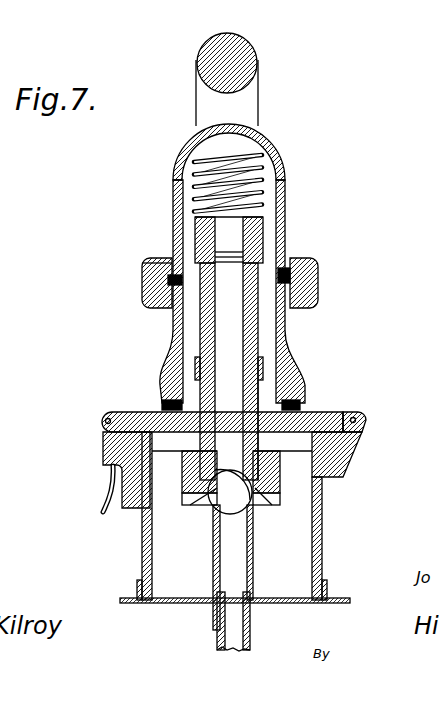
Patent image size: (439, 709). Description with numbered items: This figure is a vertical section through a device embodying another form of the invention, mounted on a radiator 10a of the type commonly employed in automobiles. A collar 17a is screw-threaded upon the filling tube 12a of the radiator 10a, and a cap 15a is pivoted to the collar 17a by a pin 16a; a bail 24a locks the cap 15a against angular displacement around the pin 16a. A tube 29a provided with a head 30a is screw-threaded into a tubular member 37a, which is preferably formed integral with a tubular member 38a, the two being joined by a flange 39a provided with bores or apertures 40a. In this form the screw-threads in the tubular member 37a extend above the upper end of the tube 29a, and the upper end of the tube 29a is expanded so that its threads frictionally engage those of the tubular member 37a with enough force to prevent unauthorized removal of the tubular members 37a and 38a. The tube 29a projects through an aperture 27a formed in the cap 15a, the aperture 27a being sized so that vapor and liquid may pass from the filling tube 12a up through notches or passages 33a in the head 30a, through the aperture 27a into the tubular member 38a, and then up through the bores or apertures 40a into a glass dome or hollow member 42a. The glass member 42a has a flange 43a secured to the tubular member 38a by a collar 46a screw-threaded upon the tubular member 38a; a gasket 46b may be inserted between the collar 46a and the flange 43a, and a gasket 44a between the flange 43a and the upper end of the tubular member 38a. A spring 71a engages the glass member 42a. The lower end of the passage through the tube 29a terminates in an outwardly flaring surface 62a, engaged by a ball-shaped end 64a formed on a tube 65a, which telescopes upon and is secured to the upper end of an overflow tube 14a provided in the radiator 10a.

The spring 71a is at (240, 162).
The dome or hollow member 42a is at (280, 168).
The tubular member 37a is at (263, 242).
The flange 39a is at (258, 272).
The flange 43a is at (312, 266).
The gasket 46b is at (172, 276).
The collar 46a is at (157, 263).
The gasket 44a is at (196, 281).
The bores or apertures 40a is at (182, 310).
The tubular member 38a is at (283, 340).
The tube 29a is at (257, 390).
The aperture 27a is at (263, 403).
The cap 15a is at (342, 412).
The pin 16a is at (363, 418).
The notches or passages 33a is at (190, 443).
The collar 17a is at (343, 477).
The bail 24a is at (110, 487).
The outwardly flaring surface 62a is at (208, 500).
The ball-shaped end 64a is at (212, 522).
The head 30a is at (280, 487).
The filling tube 12a is at (321, 518).
The radiator 10a is at (328, 598).
The tube 65a is at (250, 563).
The overflow tube 14a is at (250, 637).